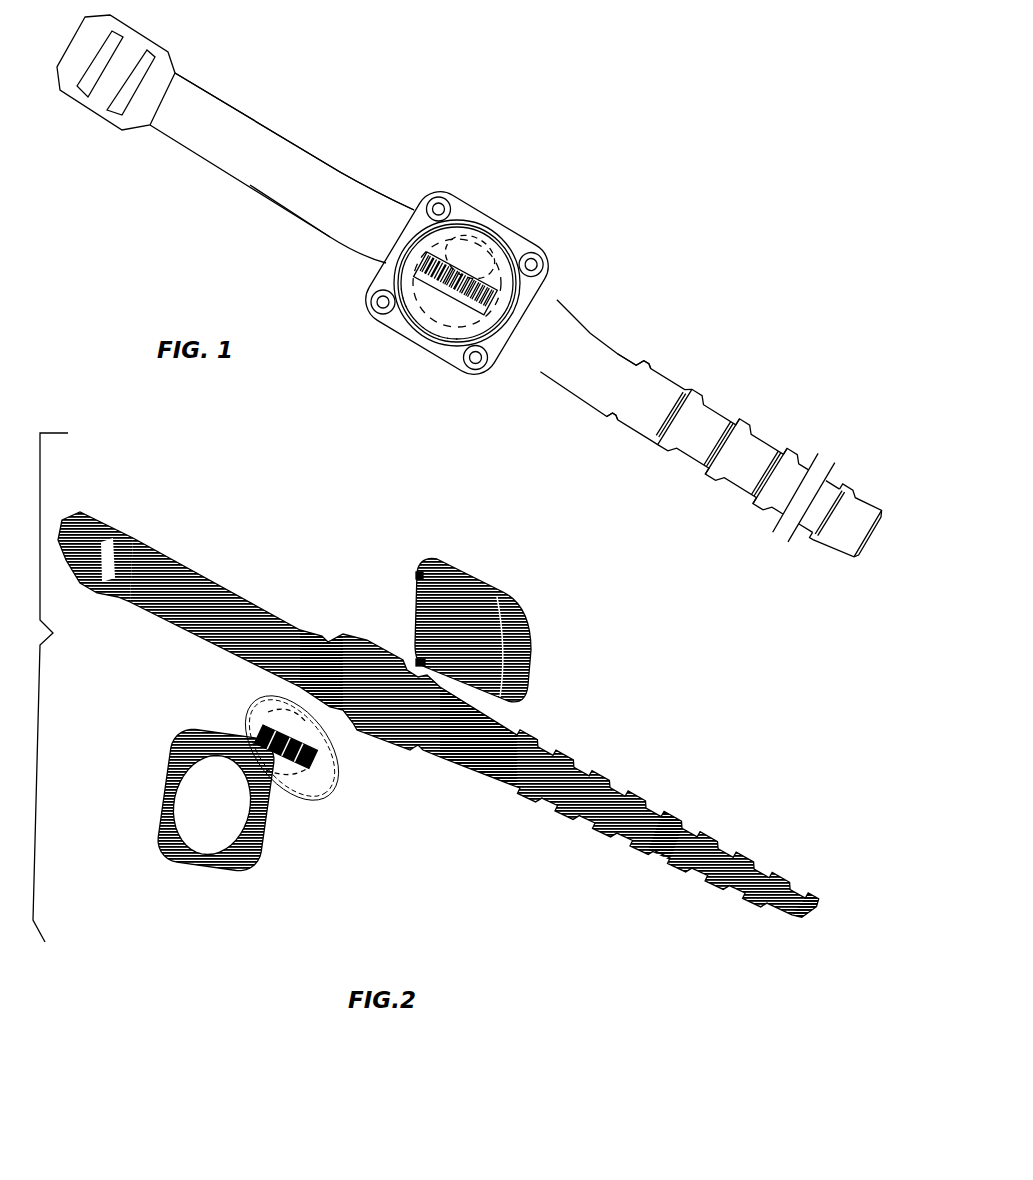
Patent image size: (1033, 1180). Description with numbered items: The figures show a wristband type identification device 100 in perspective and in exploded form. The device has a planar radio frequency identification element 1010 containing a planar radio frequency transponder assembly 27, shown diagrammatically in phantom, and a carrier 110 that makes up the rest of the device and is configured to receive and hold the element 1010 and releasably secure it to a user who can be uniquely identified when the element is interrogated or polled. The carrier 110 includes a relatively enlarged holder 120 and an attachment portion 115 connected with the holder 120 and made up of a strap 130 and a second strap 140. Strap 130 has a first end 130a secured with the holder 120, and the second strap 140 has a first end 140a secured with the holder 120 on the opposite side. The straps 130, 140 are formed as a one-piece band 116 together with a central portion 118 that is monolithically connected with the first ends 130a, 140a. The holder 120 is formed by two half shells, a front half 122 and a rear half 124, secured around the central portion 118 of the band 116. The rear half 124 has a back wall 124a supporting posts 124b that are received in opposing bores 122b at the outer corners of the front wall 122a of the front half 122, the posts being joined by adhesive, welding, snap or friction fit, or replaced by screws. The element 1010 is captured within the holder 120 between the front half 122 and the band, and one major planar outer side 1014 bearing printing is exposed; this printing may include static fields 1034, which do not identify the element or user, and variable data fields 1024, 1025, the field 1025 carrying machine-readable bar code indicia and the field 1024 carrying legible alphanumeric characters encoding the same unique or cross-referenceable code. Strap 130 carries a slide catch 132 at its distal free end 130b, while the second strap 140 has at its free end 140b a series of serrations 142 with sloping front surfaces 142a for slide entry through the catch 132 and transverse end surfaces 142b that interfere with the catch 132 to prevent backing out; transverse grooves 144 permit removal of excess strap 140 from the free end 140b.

In FIG. 1, the wristband type identification device 100 is at (735, 190).
In FIG. 2, the wristband type identification device 100 is at (103, 665).
In FIG. 1, the carrier 110 is at (248, 197).
In FIG. 1, the attachment portion 115 is at (312, 220).
In FIG. 2, the band 116 is at (727, 837).
In FIG. 2, the central portion 118 is at (368, 637).
In FIG. 1, the holder 120 is at (472, 208).
In FIG. 2, the front half 122 is at (177, 727).
In FIG. 1, the front wall 122a is at (417, 203).
In FIG. 1, the bores 122b is at (380, 307).
In FIG. 2, the rear half 124 is at (487, 582).
In FIG. 2, the back wall 124a is at (497, 637).
In FIG. 1, the posts 124b is at (477, 360).
In FIG. 2, the posts 124b is at (417, 563).
In FIG. 1, the strap portion 130 is at (242, 133).
In FIG. 2, the strap portion 130 is at (210, 587).
In FIG. 1, the first end 130a is at (345, 203).
In FIG. 2, the first end 130a is at (278, 620).
In FIG. 1, the distal free end 130b is at (155, 92).
In FIG. 2, the distal free end 130b is at (65, 508).
In FIG. 1, the slide catch 132 is at (103, 88).
In FIG. 1, the second strap 140 is at (617, 368).
In FIG. 2, the second strap 140 is at (650, 800).
In FIG. 1, the first end 140a is at (556, 382).
In FIG. 2, the first end 140a is at (487, 720).
In FIG. 1, the second distal free end 140b is at (868, 513).
In FIG. 2, the second distal free end 140b is at (813, 897).
In FIG. 1, the serrations 142 is at (748, 447).
In FIG. 1, the sloping front surfaces 142a is at (758, 513).
In FIG. 1, the transverse end surfaces 142b is at (747, 497).
In FIG. 1, the transverse grooves 144 is at (730, 413).
In FIG. 1, the planar radio frequency transponder assembly 27 is at (397, 233).
In FIG. 2, the planar radio frequency transponder assembly 27 is at (250, 748).
In FIG. 1, the planar radio frequency identification element 1010 is at (410, 287).
In FIG. 2, the planar radio frequency identification element 1010 is at (327, 773).
In FIG. 1, the major planar outer side 1014 is at (488, 235).
In FIG. 1, the variable data field 1024 is at (500, 300).
In FIG. 2, the variable data field 1024 is at (325, 757).
In FIG. 1, the variable data field 1025 is at (470, 323).
In FIG. 2, the variable data field 1025 is at (322, 803).
In FIG. 1, the static fields 1034 is at (545, 238).
In FIG. 2, the static fields 1034 is at (280, 700).